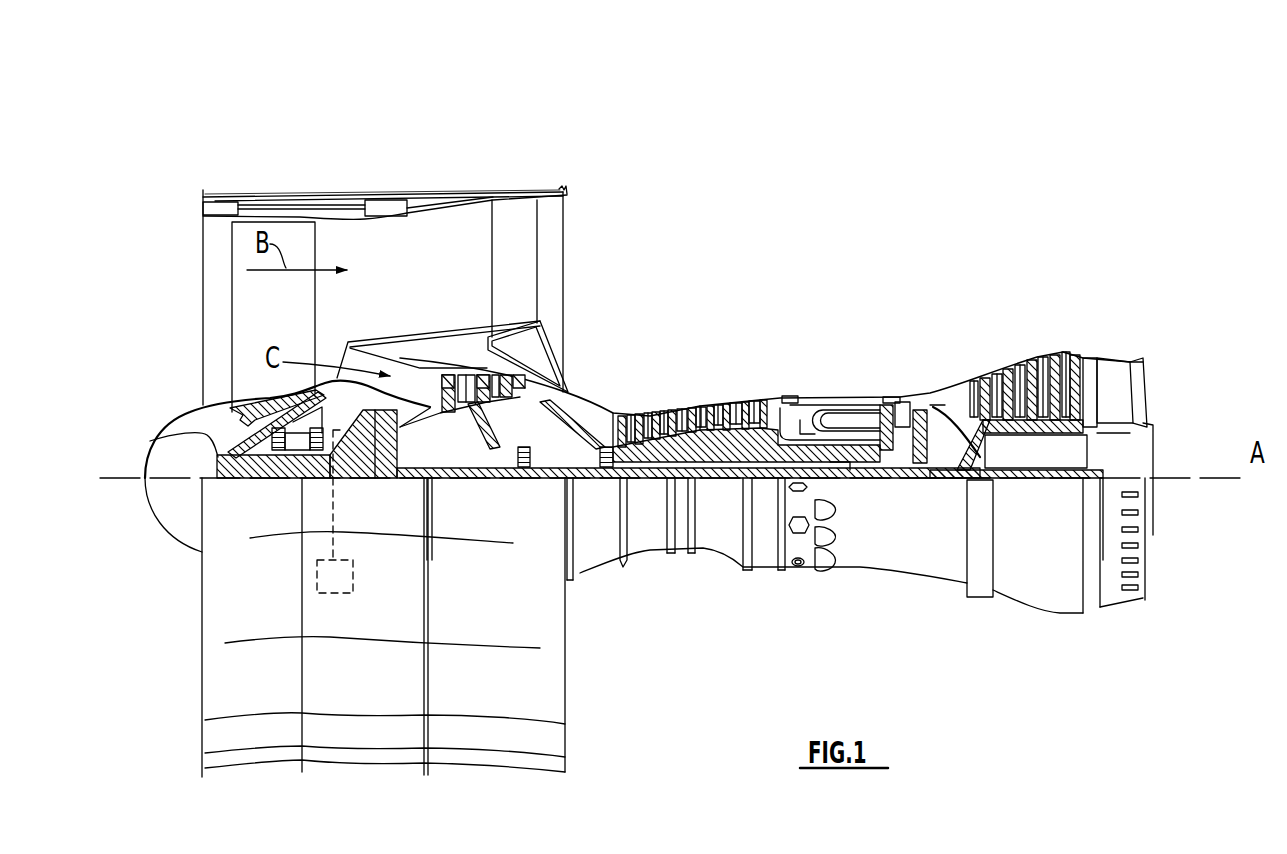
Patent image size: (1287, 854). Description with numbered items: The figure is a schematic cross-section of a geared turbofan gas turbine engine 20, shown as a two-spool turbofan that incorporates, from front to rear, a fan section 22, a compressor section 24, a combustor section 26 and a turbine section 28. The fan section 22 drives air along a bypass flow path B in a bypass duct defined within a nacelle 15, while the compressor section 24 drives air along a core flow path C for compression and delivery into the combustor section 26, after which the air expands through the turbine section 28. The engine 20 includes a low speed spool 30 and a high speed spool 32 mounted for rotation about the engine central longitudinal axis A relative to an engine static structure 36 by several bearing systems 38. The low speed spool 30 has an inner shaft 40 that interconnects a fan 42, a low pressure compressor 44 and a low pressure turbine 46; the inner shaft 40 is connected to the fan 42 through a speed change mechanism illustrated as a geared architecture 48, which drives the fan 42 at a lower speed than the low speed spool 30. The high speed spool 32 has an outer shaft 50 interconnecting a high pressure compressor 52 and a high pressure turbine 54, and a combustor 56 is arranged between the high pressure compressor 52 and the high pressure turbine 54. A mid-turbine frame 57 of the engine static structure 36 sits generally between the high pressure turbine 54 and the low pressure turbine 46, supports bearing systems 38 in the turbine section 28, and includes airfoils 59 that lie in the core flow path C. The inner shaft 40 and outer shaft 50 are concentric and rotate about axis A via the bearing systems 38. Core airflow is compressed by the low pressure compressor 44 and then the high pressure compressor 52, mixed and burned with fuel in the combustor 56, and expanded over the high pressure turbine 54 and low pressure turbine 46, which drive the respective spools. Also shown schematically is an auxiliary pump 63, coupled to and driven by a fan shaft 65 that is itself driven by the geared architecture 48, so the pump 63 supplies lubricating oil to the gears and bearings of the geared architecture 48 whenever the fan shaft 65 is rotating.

The nacelle 15 is at (382, 197).
The gas turbine engine 20 is at (845, 244).
The fan section 22 is at (313, 184).
The compressor section 24 is at (613, 390).
The combustor section 26 is at (839, 370).
The turbine section 28 is at (988, 334).
The low speed spool 30 is at (723, 484).
The high speed spool 32 is at (761, 445).
The engine static structure 36 is at (767, 573).
The bearing systems 38 is at (523, 470).
The inner shaft 40 is at (585, 482).
The fan 42 is at (286, 318).
The low pressure compressor 44 is at (495, 388).
The low pressure turbine 46 is at (1031, 370).
The geared architecture 48 is at (390, 465).
The outer shaft 50 is at (838, 462).
The high pressure compressor 52 is at (693, 455).
The high pressure turbine 54 is at (903, 400).
The combustor 56 is at (838, 420).
The mid-turbine frame 57 is at (948, 386).
The airfoils 59 is at (977, 437).
The auxiliary pump 63 is at (353, 575).
The fan shaft 65 is at (150, 441).